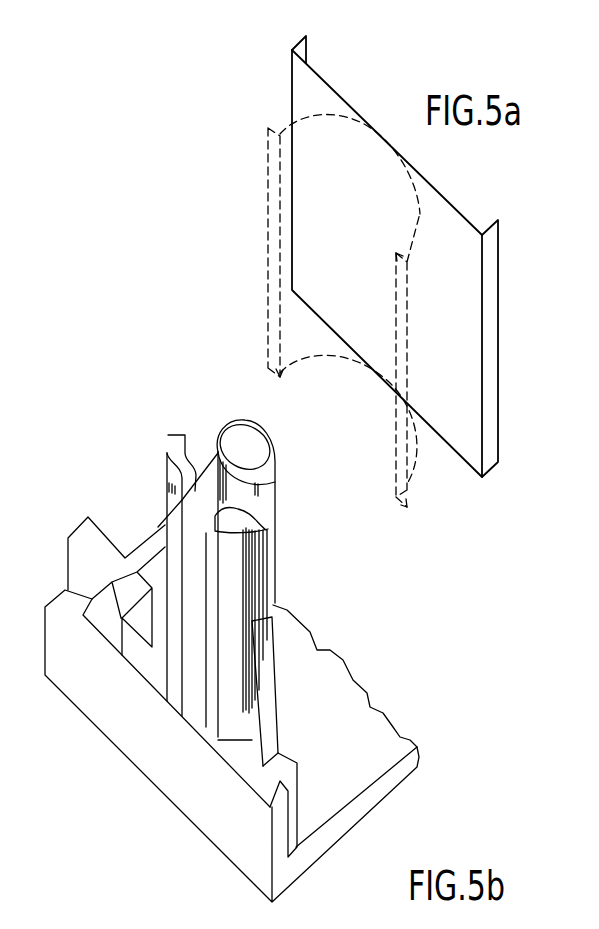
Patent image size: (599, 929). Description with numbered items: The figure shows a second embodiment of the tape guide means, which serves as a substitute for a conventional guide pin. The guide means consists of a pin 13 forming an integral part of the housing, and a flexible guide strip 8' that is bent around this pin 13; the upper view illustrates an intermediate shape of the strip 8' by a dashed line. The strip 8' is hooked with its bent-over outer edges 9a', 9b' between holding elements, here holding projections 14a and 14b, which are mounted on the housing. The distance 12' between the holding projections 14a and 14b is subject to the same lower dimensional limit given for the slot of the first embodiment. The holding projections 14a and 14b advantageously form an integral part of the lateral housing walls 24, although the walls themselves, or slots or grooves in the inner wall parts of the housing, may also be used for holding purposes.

In FIG. 5A, the flexible guide strip 8' is at (375, 287).
In FIG. 5A, the bent-over outer edge 9a' is at (516, 348).
In FIG. 5A, the bent-over outer edge 9b' is at (288, 31).
In FIG. 5B, the lateral housing wall 24 is at (143, 559).
In FIG. 5B, the distance between holding projections 12' is at (188, 596).
In FIG. 5B, the pin 13 is at (240, 437).
In FIG. 5B, the holding projection 14a is at (174, 451).
In FIG. 5B, the holding projection 14b is at (250, 521).